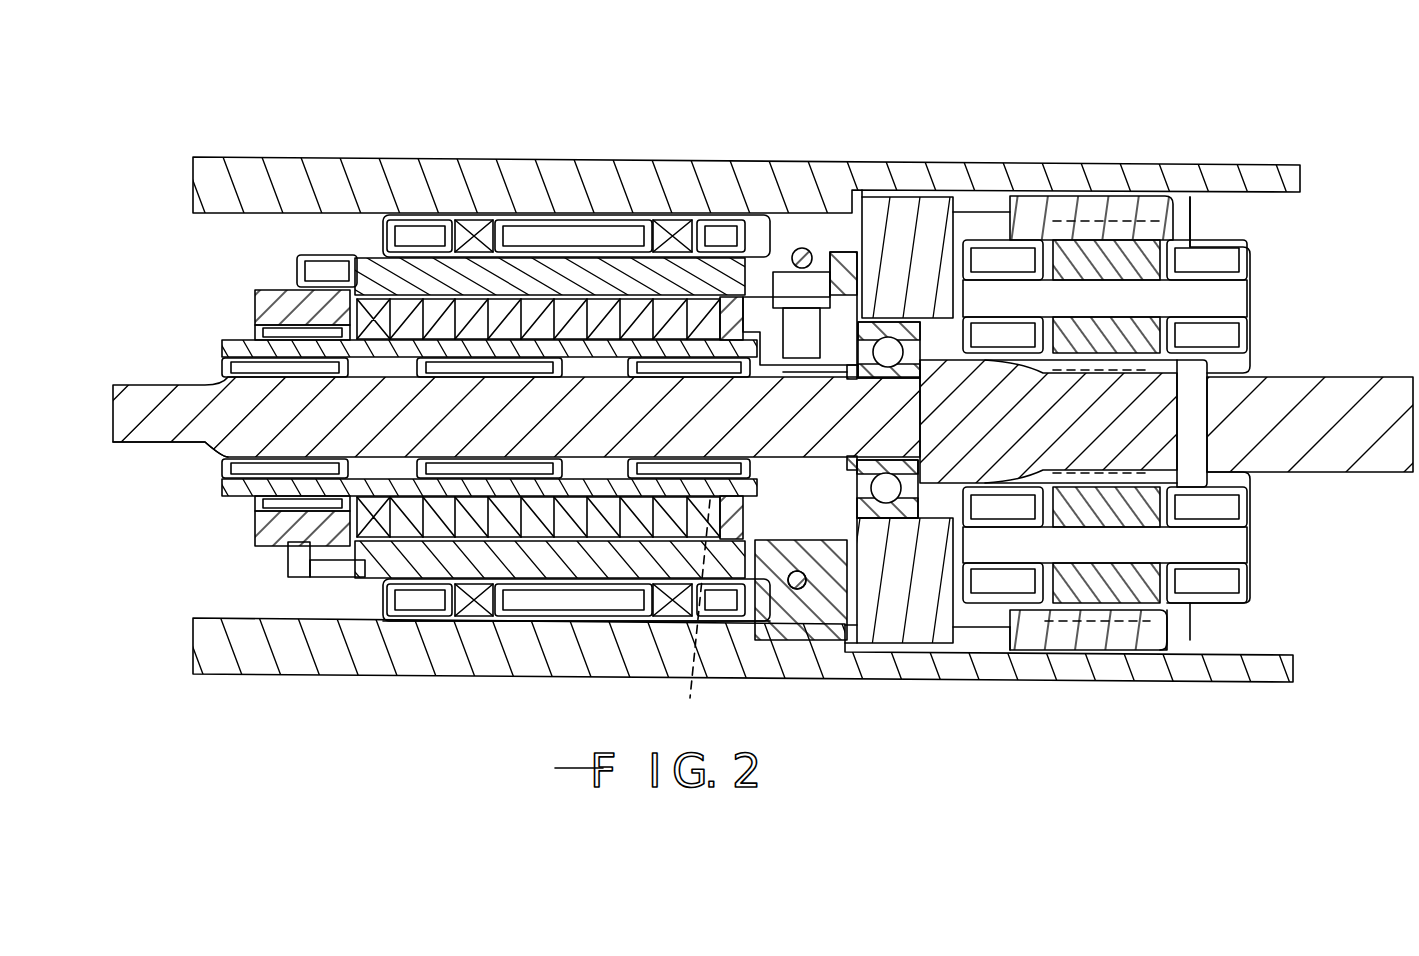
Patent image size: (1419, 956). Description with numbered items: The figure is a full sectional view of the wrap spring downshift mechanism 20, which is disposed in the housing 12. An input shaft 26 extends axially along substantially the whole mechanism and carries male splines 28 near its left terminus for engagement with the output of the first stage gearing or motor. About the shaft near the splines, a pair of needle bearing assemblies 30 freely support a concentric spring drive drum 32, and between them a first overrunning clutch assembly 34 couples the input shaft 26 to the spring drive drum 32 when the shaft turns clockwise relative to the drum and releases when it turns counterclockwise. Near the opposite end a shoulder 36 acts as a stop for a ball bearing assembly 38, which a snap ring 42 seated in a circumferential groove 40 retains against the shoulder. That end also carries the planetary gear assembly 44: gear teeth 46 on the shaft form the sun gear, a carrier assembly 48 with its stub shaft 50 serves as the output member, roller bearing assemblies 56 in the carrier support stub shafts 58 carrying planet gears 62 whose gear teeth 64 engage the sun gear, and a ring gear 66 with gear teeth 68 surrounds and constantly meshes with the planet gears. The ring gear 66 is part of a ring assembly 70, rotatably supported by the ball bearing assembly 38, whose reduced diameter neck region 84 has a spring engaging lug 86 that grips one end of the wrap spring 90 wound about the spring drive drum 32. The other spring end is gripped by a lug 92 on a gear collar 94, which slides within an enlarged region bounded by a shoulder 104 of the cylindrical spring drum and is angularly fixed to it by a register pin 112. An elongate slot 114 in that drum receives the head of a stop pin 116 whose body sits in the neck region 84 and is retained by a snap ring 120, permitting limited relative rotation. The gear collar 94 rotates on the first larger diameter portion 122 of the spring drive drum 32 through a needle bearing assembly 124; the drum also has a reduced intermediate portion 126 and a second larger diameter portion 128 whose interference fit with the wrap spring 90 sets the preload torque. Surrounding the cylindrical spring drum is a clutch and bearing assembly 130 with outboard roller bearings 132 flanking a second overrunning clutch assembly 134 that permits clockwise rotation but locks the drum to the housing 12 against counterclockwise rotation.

The housing 12 is at (565, 185).
The wrap spring downshift mechanism 20 is at (737, 400).
The input shaft 26 is at (133, 428).
The male splines 28 is at (155, 446).
The needle bearing assemblies 30 is at (283, 378).
The spring drive drum 32 is at (213, 341).
The first overrunning clutch assembly 34 is at (484, 368).
The shoulder 36 is at (907, 440).
The ball bearing assembly 38 is at (874, 320).
The circumferential groove 40 is at (849, 457).
The snap ring 42 is at (787, 378).
The planetary gear assembly 44 is at (1084, 428).
The gear teeth 46 is at (1207, 476).
The carrier assembly 48 is at (1190, 235).
The stub shaft 50 is at (1330, 378).
The roller bearing assemblies 56 is at (985, 255).
The stub shafts 58 is at (1230, 300).
The planet gears 62 is at (1095, 255).
The gear teeth 64 is at (1085, 655).
The ring gear 66 is at (1027, 643).
The gear teeth 68 is at (1160, 612).
The ring assembly 70 is at (850, 598).
The reduced diameter neck region 84 is at (785, 530).
The spring engaging ear or lug 86 is at (686, 617).
The wrap spring 90 is at (525, 285).
The spring engaging ear or lug 92 is at (378, 313).
The gear collar 94 is at (267, 293).
The shoulder 104 is at (372, 580).
The register pin 112 is at (303, 255).
The elongate slot 114 is at (770, 300).
The stop pin 116 is at (856, 254).
The snap ring 120 is at (794, 262).
The first larger diameter terminal portion 122 is at (233, 497).
The needle bearing assembly 124 is at (257, 332).
The intermediate portion 126 is at (347, 577).
The second larger diameter portion 128 is at (750, 297).
The clutch and bearing assembly 130 is at (385, 213).
The outboard roller bearings 132 is at (438, 235).
The second overrunning clutch assembly 134 is at (585, 245).